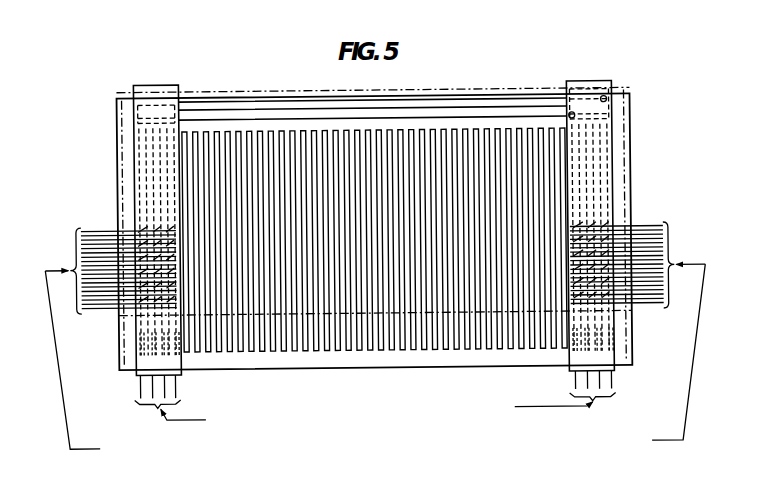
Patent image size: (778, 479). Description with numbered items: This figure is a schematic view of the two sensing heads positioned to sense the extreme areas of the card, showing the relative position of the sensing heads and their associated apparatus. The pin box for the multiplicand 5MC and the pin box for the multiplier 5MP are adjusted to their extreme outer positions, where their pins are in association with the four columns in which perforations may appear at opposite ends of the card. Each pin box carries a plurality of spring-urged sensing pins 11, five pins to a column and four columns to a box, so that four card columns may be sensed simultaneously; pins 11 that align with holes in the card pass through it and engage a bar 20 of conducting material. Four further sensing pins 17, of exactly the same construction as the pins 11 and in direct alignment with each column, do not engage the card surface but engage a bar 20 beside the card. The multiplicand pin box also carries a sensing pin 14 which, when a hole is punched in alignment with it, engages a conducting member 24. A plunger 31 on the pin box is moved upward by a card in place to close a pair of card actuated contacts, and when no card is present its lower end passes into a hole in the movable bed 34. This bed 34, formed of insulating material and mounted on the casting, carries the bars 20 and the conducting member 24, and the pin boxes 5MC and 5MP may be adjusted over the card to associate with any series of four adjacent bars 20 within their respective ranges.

The movable bed 34 is at (338, 361).
The conducting member 24 is at (487, 110).
The bar of conducting material 20 is at (274, 122).
The pin box for the multiplicand 5MC is at (126, 371).
The pin box for the multiplier 5MP is at (560, 370).
The sensing pins 11 is at (124, 224).
The sensing pins 17 is at (128, 336).
The sensing pin 14 is at (562, 107).
The plunger 31 is at (601, 91).